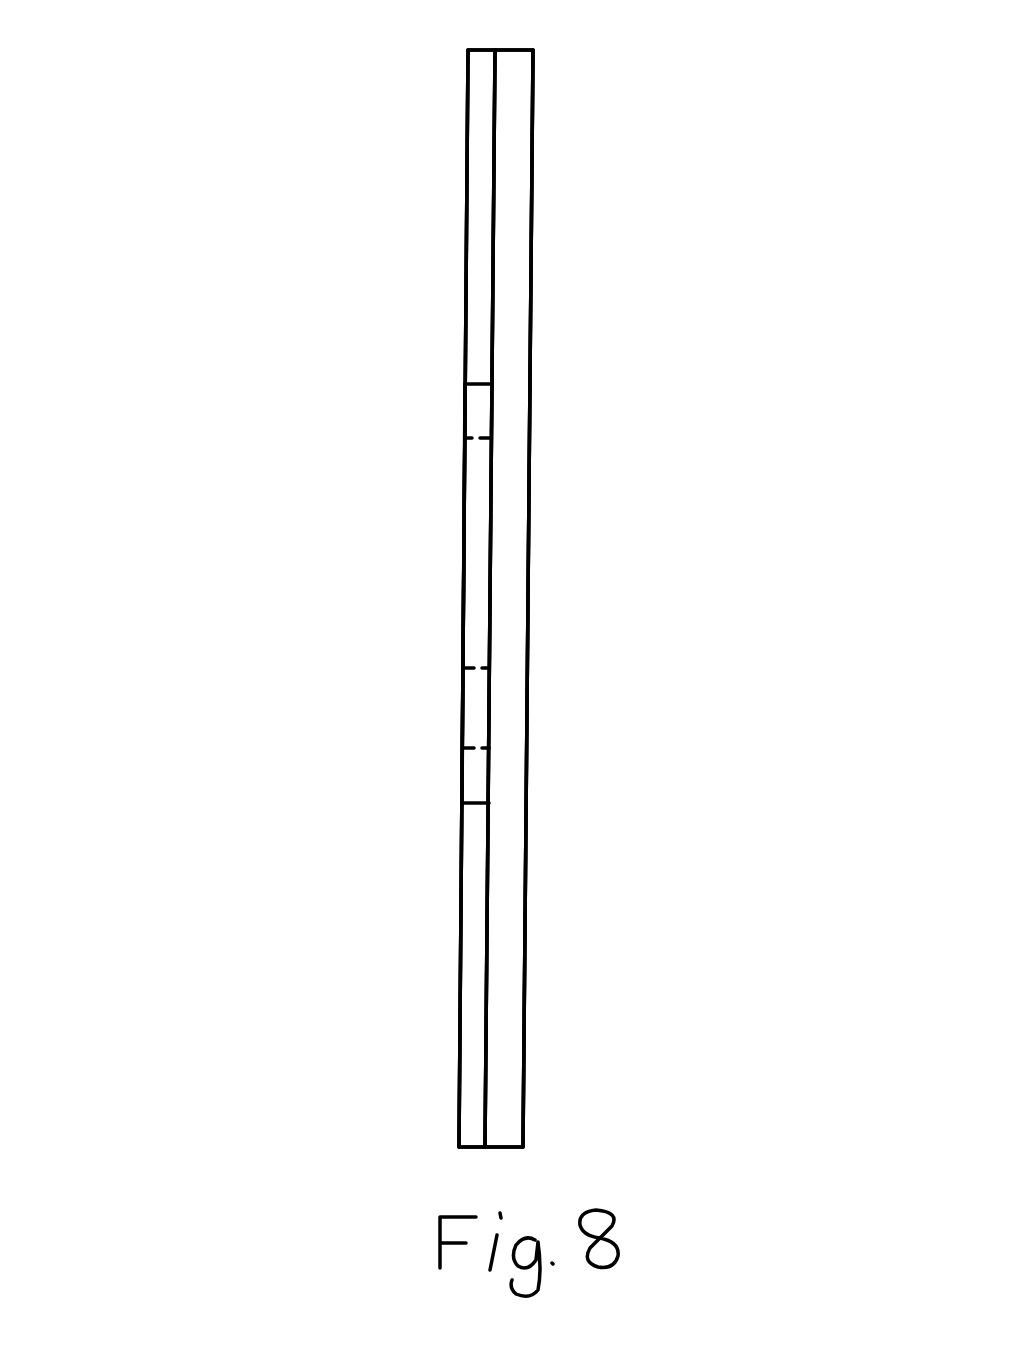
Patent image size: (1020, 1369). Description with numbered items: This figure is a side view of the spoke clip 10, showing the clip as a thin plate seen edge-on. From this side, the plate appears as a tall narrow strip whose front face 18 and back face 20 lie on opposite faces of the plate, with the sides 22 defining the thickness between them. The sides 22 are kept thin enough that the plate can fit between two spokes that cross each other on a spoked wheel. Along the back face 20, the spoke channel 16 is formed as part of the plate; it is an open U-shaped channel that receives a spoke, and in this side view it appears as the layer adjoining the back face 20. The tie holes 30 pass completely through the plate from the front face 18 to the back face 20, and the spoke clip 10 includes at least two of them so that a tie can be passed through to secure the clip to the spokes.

The spoke clip 10 is at (205, 238).
The spoke channel 16 is at (511, 135).
The front face 18 is at (448, 530).
The back face 20 is at (510, 526).
The sides 22 is at (462, 607).
The tie holes 30 is at (467, 470).